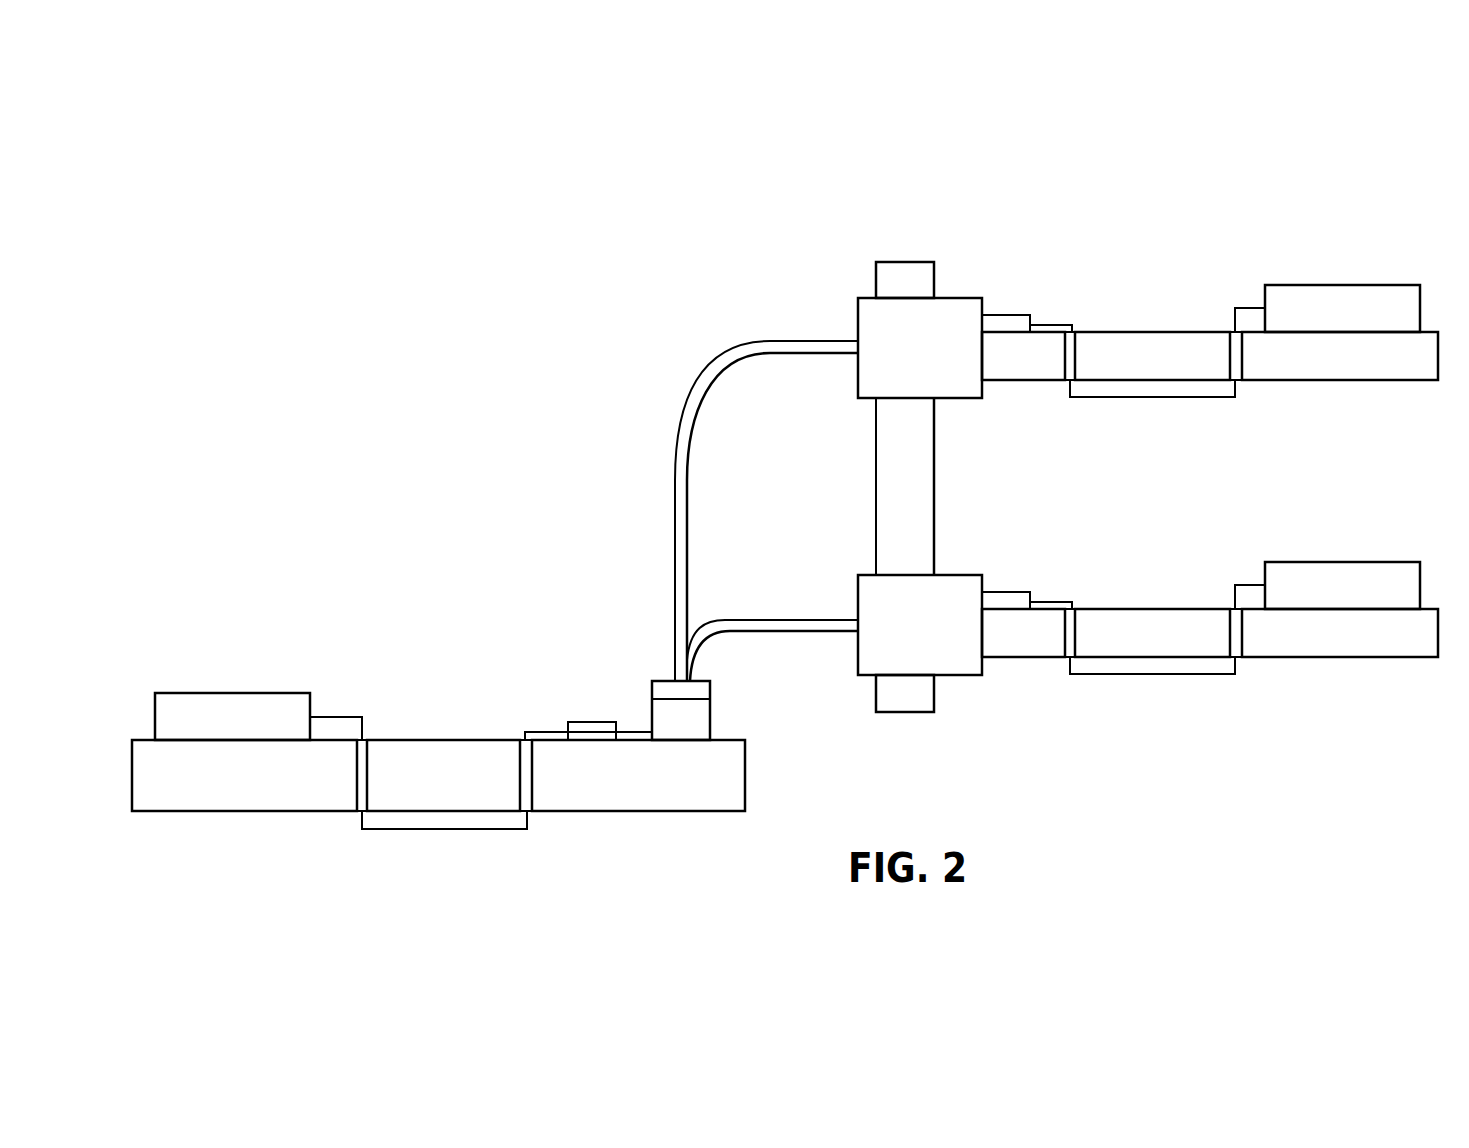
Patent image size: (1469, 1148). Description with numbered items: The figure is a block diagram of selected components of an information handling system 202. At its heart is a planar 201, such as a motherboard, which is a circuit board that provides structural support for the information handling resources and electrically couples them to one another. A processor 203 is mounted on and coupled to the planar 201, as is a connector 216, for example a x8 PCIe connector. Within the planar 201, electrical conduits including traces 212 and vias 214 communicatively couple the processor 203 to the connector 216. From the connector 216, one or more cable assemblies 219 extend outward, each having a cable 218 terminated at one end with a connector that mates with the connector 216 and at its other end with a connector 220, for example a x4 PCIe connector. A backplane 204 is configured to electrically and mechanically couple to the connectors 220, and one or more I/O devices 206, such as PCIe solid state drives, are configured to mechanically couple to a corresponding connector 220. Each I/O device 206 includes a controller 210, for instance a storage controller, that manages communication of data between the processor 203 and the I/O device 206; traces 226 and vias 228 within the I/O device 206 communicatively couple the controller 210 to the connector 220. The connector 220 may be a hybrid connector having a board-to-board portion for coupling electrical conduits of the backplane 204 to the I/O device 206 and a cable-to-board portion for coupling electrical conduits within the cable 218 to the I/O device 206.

The planar 201 is at (220, 812).
The information handling system 202 is at (1265, 171).
The processor 203 is at (230, 693).
The backplane 204 is at (934, 487).
The I/O device 206 is at (1368, 382).
The controller 210 is at (1342, 285).
The traces 212 is at (340, 717).
The vias 214 is at (357, 777).
The connector 216 is at (712, 718).
The cable 218 is at (676, 445).
The cable assembly 219 is at (868, 297).
The connector 220 is at (960, 302).
The traces 226 is at (1050, 325).
The vias 228 is at (1062, 362).